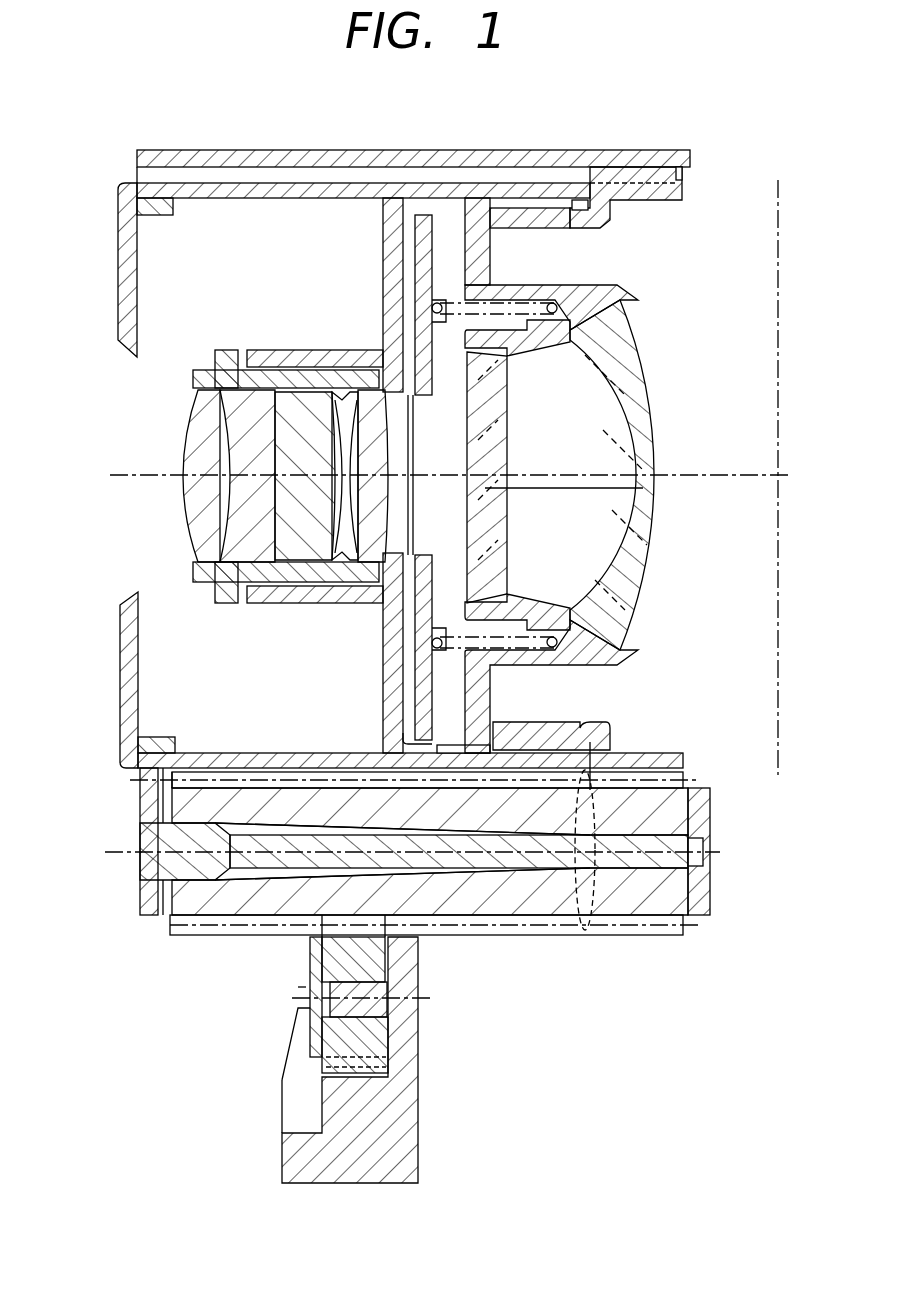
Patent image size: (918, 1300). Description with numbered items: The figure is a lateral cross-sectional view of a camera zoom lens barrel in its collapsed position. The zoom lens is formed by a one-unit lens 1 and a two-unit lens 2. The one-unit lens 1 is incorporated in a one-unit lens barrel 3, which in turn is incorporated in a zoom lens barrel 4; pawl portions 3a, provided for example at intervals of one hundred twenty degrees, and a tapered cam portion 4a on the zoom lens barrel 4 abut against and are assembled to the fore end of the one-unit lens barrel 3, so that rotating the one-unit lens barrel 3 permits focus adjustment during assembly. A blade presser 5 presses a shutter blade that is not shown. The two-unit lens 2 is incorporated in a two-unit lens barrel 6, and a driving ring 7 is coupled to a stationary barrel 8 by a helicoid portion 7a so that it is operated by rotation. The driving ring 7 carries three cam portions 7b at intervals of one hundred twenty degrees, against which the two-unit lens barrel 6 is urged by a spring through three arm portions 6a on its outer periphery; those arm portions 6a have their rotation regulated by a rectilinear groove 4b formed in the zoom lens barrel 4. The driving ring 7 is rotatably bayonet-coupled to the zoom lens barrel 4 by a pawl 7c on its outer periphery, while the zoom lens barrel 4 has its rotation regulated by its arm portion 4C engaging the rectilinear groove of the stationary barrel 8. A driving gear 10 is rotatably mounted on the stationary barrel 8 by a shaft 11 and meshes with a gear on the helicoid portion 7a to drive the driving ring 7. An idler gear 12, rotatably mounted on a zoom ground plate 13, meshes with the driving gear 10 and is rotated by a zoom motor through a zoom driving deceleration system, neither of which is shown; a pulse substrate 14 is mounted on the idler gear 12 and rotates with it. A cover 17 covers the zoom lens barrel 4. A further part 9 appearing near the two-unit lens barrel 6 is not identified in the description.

The one-unit lens 1 is at (285, 476).
The two-unit lens 2 is at (560, 475).
The one-unit lens barrel 3 is at (278, 595).
The pawl portions 3a is at (215, 358).
The zoom lens barrel 4 is at (385, 272).
The tapered cam portion 4a is at (258, 350).
The rectilinear groove 4b is at (528, 185).
The arm portion 4C is at (590, 925).
The blade presser 5 is at (428, 700).
The two-unit lens barrel 6 is at (605, 665).
The arm portions 6a is at (487, 210).
The driving ring 7 is at (612, 215).
The helicoid portion 7a is at (683, 175).
The cam portions 7b is at (526, 226).
The pawl 7c is at (578, 212).
The stationary barrel 8 is at (575, 150).
The support block 9 is at (523, 670).
The driving gear 10 is at (496, 905).
The shaft 11 is at (162, 858).
The idler gear 12 is at (388, 1035).
The zoom ground plate 13 is at (405, 1118).
The pulse substrate 14 is at (310, 980).
The cover 17 is at (128, 680).